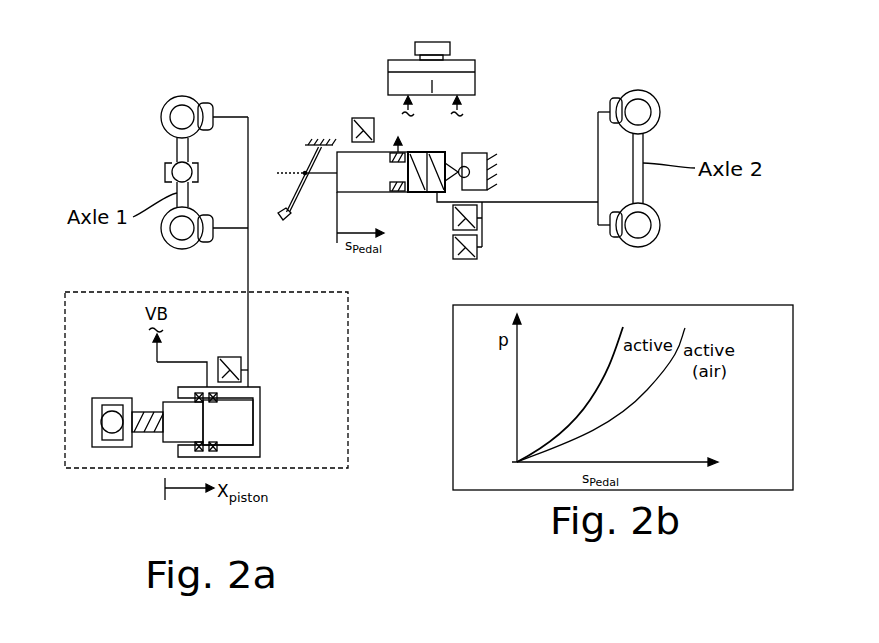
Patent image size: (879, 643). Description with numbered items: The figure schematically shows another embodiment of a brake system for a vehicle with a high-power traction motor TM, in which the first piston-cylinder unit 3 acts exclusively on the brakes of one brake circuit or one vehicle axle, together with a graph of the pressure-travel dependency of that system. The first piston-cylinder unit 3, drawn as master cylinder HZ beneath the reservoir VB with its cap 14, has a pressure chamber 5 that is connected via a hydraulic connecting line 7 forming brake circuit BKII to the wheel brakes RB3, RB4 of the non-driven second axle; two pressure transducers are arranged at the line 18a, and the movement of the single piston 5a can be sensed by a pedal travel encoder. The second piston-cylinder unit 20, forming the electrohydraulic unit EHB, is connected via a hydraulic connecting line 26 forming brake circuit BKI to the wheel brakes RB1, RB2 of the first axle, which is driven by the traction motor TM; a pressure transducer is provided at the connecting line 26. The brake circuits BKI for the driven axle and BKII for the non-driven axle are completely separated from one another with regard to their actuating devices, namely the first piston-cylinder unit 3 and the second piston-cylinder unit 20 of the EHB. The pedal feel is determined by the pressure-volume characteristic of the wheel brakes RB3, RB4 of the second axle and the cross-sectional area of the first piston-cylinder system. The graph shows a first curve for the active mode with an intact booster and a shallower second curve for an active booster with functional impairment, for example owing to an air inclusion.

The wheel brake RB1 is at (203, 102).
The wheel brake RB2 is at (203, 243).
The wheel brake RB3 is at (615, 98).
The wheel brake RB4 is at (617, 238).
The brake circuit BKI is at (250, 130).
The brake circuit BKII is at (518, 198).
The traction motor TM is at (165, 172).
The second piston-cylinder unit EHB is at (80, 292).
The hydraulic connecting line 26 is at (248, 318).
The reservoir VB is at (416, 85).
The second piston-cylinder unit 20 is at (151, 447).
The reservoir cap / filler 14 is at (395, 60).
The hydraulic connecting line 7 is at (362, 117).
The first piston-cylinder unit 3 is at (448, 140).
The pressure chamber 5 is at (447, 151).
The master cylinder HZ is at (381, 183).
The single piston 5a is at (382, 180).
The line 18a is at (547, 207).